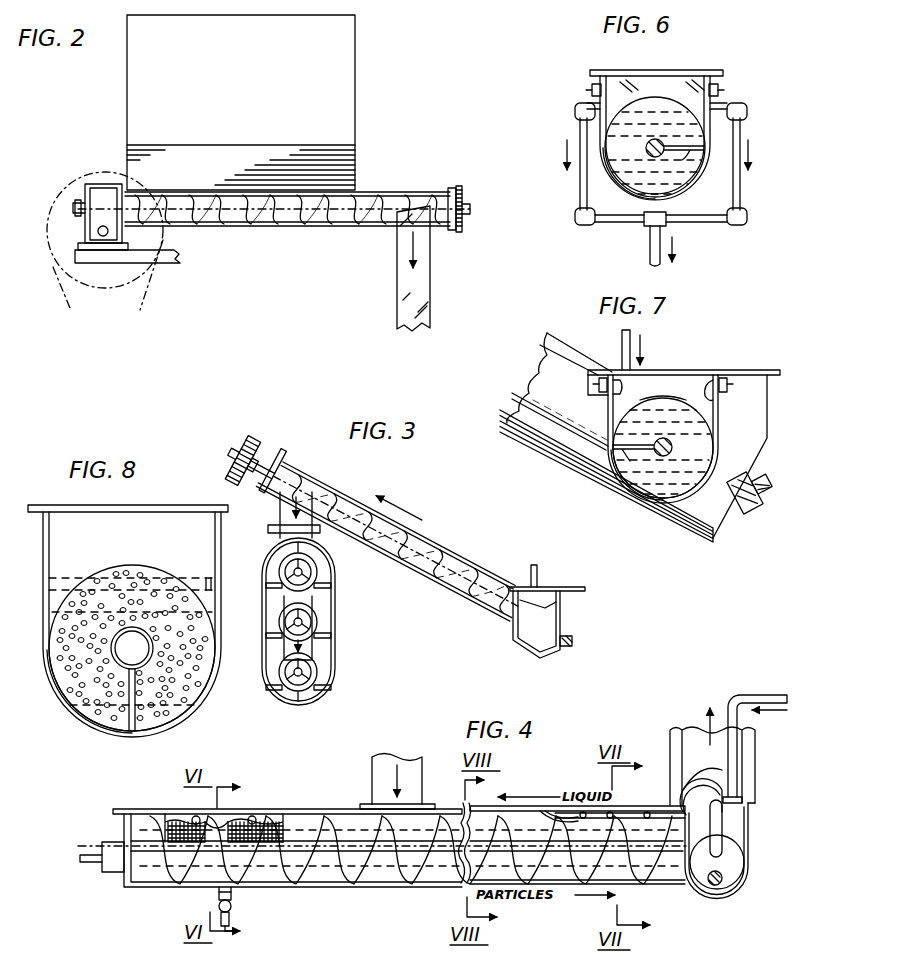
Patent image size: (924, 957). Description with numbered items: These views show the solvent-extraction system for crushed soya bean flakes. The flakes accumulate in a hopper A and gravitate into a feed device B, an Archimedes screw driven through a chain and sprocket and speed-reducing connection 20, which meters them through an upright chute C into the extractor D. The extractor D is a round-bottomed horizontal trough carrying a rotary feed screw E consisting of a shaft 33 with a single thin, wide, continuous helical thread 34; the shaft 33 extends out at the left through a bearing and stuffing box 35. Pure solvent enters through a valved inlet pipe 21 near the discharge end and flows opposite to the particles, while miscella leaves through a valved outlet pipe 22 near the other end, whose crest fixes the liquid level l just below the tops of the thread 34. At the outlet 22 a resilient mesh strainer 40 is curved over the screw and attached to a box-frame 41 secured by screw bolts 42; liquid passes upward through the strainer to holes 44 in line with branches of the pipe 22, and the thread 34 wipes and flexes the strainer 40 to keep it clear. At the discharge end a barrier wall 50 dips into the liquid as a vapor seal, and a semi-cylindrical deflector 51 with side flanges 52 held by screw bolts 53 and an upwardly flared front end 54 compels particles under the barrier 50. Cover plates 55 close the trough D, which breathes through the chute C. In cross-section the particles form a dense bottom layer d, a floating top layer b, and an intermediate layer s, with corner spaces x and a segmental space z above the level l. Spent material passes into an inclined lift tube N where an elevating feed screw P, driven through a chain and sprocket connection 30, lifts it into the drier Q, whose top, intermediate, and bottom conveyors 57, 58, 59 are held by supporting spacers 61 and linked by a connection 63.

In FIG. 2, the chain and sprocket and speed-reducing connection 20 is at (53, 274).
In FIG. 7, the valved inlet pipe 21 is at (622, 337).
In FIG. 3, the valved inlet pipe 21 is at (538, 570).
In FIG. 4, the valved inlet pipe 21 is at (737, 769).
In FIG. 6, the valved outlet pipe 22 is at (578, 192).
In FIG. 4, the valved outlet pipe 22 is at (220, 896).
In FIG. 3, the chain and sprocket connection 30 is at (250, 440).
In FIG. 6, the screw shaft 33 is at (655, 158).
In FIG. 7, the screw shaft 33 is at (663, 457).
In FIG. 8, the screw shaft 33 is at (132, 648).
In FIG. 4, the screw shaft 33 is at (84, 853).
In FIG. 6, the helical thread 34 is at (712, 142).
In FIG. 7, the helical thread 34 is at (718, 436).
In FIG. 8, the helical thread 34 is at (136, 734).
In FIG. 4, the helical thread 34 is at (163, 884).
In FIG. 4, the bearing and stuffing box 35 is at (106, 870).
In FIG. 6, the strainer 40 is at (655, 80).
In FIG. 4, the strainer 40 is at (198, 812).
In FIG. 6, the box-frame 41 is at (694, 78).
In FIG. 4, the box-frame 41 is at (284, 798).
In FIG. 6, the screw bolts 42 is at (590, 84).
In FIG. 6, the holes 44 is at (586, 102).
In FIG. 4, the holes 44 is at (240, 798).
In FIG. 7, the barrier wall 50 is at (610, 420).
In FIG. 3, the barrier wall 50 is at (576, 592).
In FIG. 4, the barrier wall 50 is at (746, 818).
In FIG. 7, the deflector 51 is at (666, 398).
In FIG. 4, the deflector 51 is at (640, 811).
In FIG. 7, the side flanges 52 is at (706, 380).
In FIG. 7, the screw bolts 53 is at (727, 382).
In FIG. 4, the flared front end 54 is at (562, 816).
In FIG. 6, the cover plates 55 is at (622, 71).
In FIG. 7, the cover plates 55 is at (774, 370).
In FIG. 3, the cover plates 55 is at (547, 589).
In FIG. 8, the cover plates 55 is at (196, 505).
In FIG. 4, the cover plates 55 is at (150, 809).
In FIG. 3, the top conveyor 57 is at (320, 563).
In FIG. 3, the intermediate conveyor 58 is at (318, 611).
In FIG. 3, the bottom conveyor 59 is at (320, 681).
In FIG. 3, the supporting spacers 61 is at (276, 589).
In FIG. 3, the connection 63 is at (283, 665).
In FIG. 8, the connection 63 is at (257, 679).
In FIG. 2, the hopper A is at (130, 100).
In FIG. 2, the feed device B is at (386, 191).
In FIG. 2, the chute C is at (397, 285).
In FIG. 4, the chute C is at (372, 768).
In FIG. 6, the extractor D is at (614, 180).
In FIG. 7, the extractor D is at (718, 436).
In FIG. 3, the extractor D is at (561, 607).
In FIG. 8, the extractor D is at (66, 703).
In FIG. 4, the extractor D is at (323, 807).
In FIG. 6, the feed screw E is at (706, 170).
In FIG. 7, the feed screw E is at (616, 482).
In FIG. 8, the feed screw E is at (112, 735).
In FIG. 4, the feed screw E is at (389, 886).
In FIG. 7, the lift tube N is at (543, 440).
In FIG. 3, the lift tube N is at (507, 570).
In FIG. 4, the lift tube N is at (700, 736).
In FIG. 3, the elevating feed screw P is at (456, 554).
In FIG. 4, the elevating feed screw P is at (747, 844).
In FIG. 3, the drier Q is at (336, 628).
In FIG. 6, the liquid level line l is at (647, 117).
In FIG. 7, the liquid level line l is at (674, 426).
In FIG. 8, the liquid level line l is at (195, 575).
In FIG. 4, the liquid level line l is at (360, 834).
In FIG. 8, the corner spaces x is at (80, 570).
In FIG. 8, the segmental space z is at (134, 564).
In FIG. 8, the top layer b is at (230, 578).
In FIG. 8, the intermediate layer s is at (230, 700).
In FIG. 8, the bottom layer d is at (230, 703).